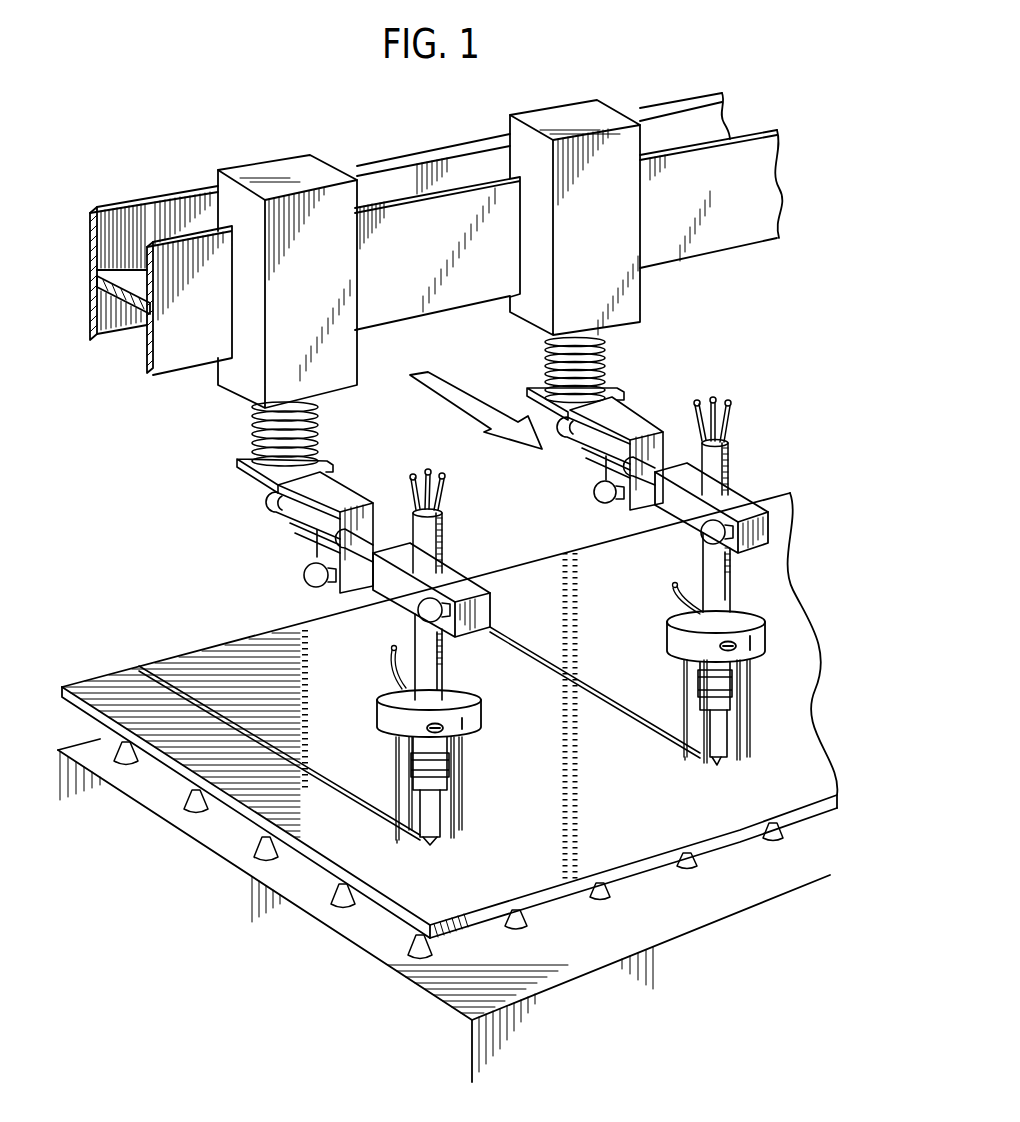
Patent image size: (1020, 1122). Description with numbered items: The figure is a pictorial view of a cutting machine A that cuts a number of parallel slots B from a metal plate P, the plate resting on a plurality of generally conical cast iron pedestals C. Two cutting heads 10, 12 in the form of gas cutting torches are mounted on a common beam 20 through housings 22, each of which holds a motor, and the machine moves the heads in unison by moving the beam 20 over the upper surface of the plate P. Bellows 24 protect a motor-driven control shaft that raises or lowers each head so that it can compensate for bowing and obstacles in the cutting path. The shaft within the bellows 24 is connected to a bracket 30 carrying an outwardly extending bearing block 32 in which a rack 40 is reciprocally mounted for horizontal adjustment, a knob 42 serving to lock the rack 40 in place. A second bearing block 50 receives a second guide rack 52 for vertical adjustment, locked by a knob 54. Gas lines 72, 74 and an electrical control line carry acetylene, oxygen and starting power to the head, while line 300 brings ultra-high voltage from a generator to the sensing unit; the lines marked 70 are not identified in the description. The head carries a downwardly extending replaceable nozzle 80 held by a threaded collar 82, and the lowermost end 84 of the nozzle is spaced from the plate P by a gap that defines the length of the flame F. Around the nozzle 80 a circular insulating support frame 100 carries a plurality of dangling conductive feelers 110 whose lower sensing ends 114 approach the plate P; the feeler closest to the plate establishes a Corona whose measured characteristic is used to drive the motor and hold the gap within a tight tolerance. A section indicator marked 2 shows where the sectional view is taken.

The section line 2- 2 is at (157, 137).
The machine A is at (660, 58).
The cutting head 10 is at (452, 772).
The cutting head 12 is at (733, 692).
The beam 20 is at (180, 367).
The housing 22 is at (338, 388).
The bellows 24 is at (250, 430).
The bracket 30 is at (262, 483).
The bearing block 32 is at (357, 493).
The rack 40 is at (295, 525).
The knob 42 is at (307, 582).
The bearing block 50 is at (487, 607).
The second guide rack 52 is at (442, 673).
The knob 54 is at (437, 597).
The lead wire 70 is at (415, 472).
The gas line 72 is at (432, 470).
The gas line / electrical control line 74 is at (445, 483).
The nozzle 80 is at (438, 808).
The threaded collar 82 is at (415, 778).
The lowermost end 84 is at (429, 843).
The support frame 100 is at (378, 720).
The feeler 110 is at (411, 818).
The sensing end 114 is at (393, 842).
The line 300 is at (388, 665).
The metal plate P is at (235, 648).
The slot B is at (322, 776).
The pedestal C is at (127, 765).
The flame F is at (440, 838).